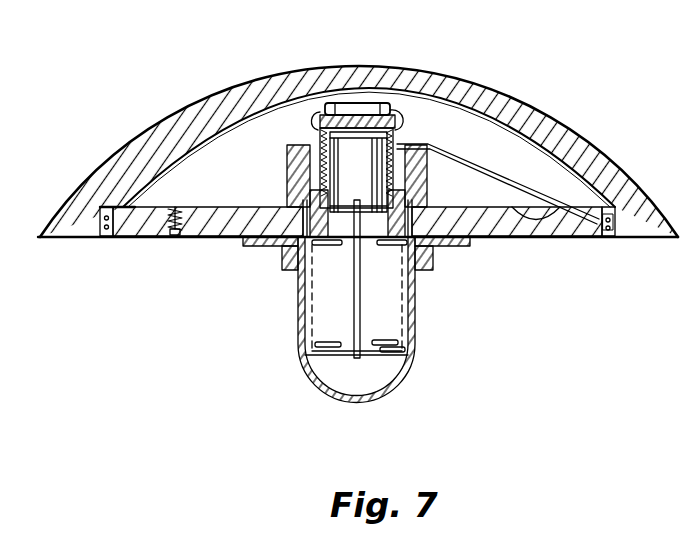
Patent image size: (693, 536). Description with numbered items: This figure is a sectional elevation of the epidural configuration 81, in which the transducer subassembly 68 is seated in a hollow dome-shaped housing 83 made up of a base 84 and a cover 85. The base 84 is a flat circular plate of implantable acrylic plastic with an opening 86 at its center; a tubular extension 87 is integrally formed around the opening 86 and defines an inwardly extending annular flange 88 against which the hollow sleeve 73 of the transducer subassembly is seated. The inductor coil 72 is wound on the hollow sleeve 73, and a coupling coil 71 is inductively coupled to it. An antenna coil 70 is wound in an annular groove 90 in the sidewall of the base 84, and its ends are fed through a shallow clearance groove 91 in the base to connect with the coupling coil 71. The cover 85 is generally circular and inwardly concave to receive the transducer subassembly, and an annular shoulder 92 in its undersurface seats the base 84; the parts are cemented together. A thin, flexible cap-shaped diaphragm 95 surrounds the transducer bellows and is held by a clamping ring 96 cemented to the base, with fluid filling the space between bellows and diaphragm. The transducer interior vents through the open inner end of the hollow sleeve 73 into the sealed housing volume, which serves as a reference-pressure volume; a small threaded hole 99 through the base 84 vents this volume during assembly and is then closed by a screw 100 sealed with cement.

The transducer subassembly 68 is at (386, 368).
The antenna coil 70 is at (103, 227).
The coupling coil 71 is at (328, 184).
The inductor coil 72 is at (415, 131).
The hollow sleeve 73 is at (378, 240).
The epidural configuration 81 is at (357, 239).
The dome-shaped housing 83 is at (118, 137).
The base 84 is at (572, 238).
The cover 85 is at (438, 70).
The opening 86 is at (253, 215).
The tubular extension 87 is at (428, 187).
The annular flange 88 is at (290, 177).
The annular groove 90 is at (132, 228).
The clearance groove 91 is at (512, 207).
The annular shoulder 92 is at (607, 210).
The diaphragm 95 is at (352, 405).
The clamping ring 96 is at (433, 260).
The threaded hole 99 is at (174, 185).
The screw 100 is at (173, 233).